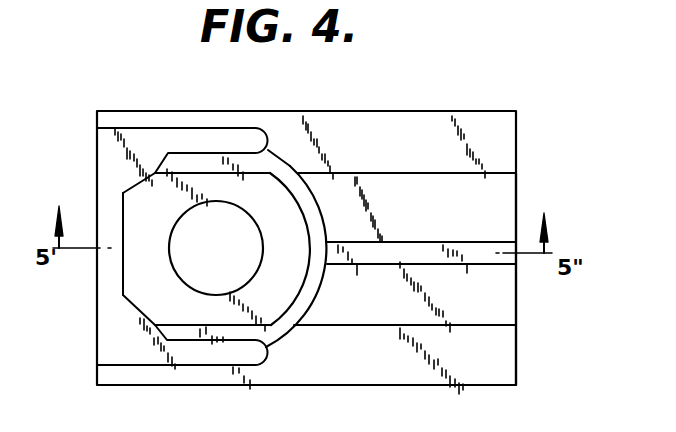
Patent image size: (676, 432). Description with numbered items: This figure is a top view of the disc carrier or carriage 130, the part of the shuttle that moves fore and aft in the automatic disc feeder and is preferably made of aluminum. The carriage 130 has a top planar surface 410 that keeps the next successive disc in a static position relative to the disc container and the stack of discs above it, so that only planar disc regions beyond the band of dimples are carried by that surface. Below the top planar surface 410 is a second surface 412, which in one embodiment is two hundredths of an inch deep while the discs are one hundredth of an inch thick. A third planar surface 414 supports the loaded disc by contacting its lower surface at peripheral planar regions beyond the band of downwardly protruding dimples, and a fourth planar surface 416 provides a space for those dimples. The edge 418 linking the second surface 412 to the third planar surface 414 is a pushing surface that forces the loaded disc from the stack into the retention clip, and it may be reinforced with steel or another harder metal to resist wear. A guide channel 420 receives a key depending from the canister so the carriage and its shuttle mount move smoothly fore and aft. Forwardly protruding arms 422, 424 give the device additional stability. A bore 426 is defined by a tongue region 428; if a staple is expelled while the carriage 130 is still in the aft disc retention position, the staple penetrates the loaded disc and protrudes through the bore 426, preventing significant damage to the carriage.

The disc carrier or carriage 130 is at (352, 113).
The top planar surface 410 is at (452, 127).
The second surface 412 is at (512, 202).
The third planar surface 414 is at (238, 157).
The fourth planar surface 416 is at (132, 192).
The edge or pushing surface 418 is at (288, 177).
The guide channel 420 is at (390, 252).
The forwardly protruding arm 422 is at (173, 110).
The forwardly protruding arm 424 is at (112, 364).
The bore 426 is at (236, 261).
The tongue region 428 is at (123, 264).